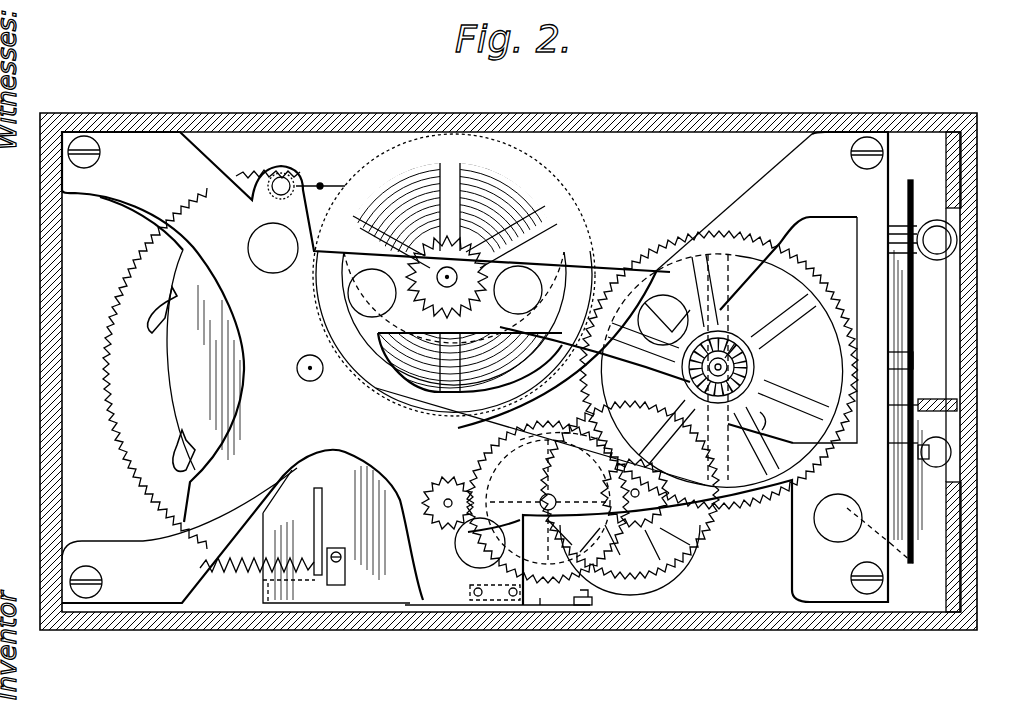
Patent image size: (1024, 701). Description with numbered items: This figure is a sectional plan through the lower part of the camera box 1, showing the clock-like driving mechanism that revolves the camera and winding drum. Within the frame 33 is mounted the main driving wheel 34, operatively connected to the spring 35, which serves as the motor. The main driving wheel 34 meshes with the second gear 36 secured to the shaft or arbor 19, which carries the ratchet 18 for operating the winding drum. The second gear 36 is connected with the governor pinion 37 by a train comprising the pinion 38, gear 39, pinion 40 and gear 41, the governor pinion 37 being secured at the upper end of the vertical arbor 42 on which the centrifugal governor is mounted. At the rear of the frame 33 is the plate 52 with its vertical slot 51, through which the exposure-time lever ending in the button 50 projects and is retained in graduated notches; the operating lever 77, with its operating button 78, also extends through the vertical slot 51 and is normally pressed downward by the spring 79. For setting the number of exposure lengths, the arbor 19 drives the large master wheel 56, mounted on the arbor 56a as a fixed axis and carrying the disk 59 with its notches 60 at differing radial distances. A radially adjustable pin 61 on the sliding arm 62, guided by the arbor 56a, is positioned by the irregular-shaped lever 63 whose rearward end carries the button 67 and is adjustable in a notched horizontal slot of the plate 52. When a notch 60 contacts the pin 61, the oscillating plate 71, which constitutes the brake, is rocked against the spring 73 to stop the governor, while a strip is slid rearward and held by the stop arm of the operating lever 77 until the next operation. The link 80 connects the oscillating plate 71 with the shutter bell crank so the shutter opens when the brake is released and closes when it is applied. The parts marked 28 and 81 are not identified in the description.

The camera box 1 is at (730, 118).
The ratchet 18 is at (742, 362).
The shaft or arbor 19 is at (735, 343).
The arm 28 is at (762, 430).
The frame 33 is at (487, 368).
The main driving wheel 34 is at (560, 194).
The spring 35 is at (470, 212).
The second gear 36 is at (658, 240).
The governor pinion 37 is at (438, 482).
The pinion 38 is at (635, 502).
The gear 39 is at (682, 556).
The pinion 40 is at (548, 502).
The gear 41 is at (555, 432).
The vertical arbor 42 is at (450, 516).
The button 50 is at (960, 402).
The vertical slot 51 is at (917, 378).
The plate 52 is at (905, 186).
The master wheel 56 is at (124, 274).
The arbor 56a is at (297, 370).
The disk 59 is at (193, 335).
The notches 60 is at (169, 380).
The adjustable pin 61 is at (322, 590).
The radially movable arm 62 is at (290, 600).
The lever 63 is at (788, 330).
The button 67 is at (957, 240).
The oscillating plate 71 is at (332, 518).
The spring 73 is at (238, 578).
The operating lever 77 is at (910, 443).
The operating button 78 is at (952, 452).
The spring 79 is at (540, 608).
The link 80 is at (410, 608).
The bracket 81 is at (590, 596).